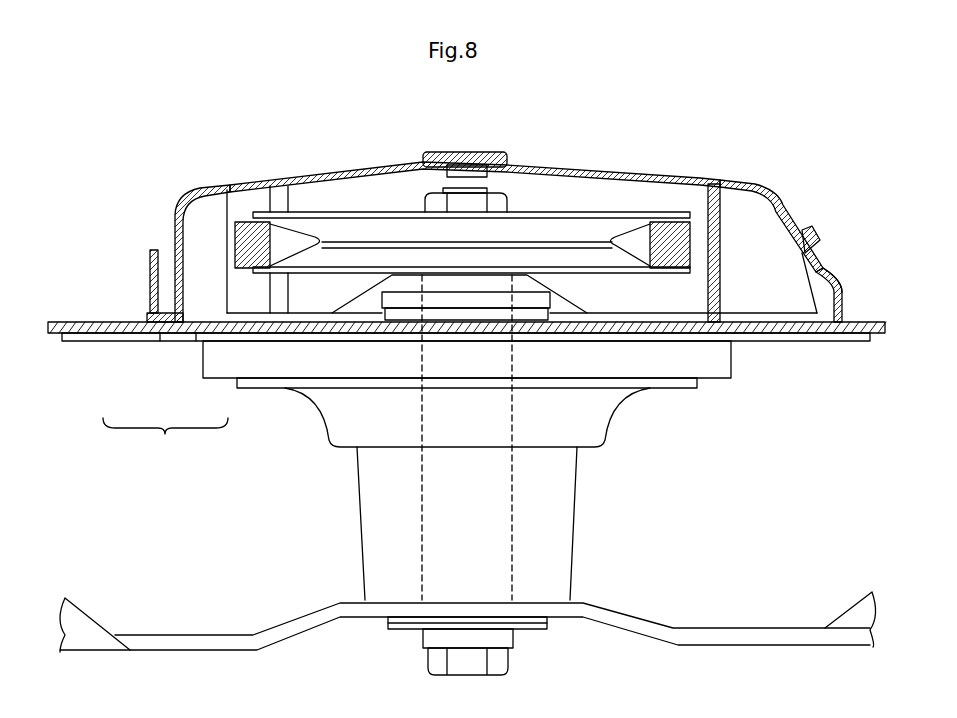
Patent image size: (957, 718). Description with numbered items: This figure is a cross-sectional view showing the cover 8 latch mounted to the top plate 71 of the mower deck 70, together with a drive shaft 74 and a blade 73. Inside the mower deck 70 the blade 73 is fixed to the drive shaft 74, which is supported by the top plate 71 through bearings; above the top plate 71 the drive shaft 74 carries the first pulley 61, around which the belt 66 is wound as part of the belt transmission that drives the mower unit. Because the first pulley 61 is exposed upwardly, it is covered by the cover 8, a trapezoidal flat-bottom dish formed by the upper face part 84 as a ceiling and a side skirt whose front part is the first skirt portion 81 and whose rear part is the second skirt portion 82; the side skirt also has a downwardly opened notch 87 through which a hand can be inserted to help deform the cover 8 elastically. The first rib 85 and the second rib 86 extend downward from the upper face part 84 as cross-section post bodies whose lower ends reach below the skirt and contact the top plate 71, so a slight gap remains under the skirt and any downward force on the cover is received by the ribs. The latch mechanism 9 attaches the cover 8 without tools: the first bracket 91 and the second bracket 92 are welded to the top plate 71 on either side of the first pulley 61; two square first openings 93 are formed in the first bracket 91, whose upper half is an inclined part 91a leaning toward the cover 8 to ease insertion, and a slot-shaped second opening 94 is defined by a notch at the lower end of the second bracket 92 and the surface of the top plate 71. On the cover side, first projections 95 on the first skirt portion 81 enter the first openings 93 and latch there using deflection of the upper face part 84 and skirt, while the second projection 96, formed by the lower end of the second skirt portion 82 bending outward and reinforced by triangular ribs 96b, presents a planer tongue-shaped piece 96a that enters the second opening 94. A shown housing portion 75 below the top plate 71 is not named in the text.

The cover 8 is at (466, 203).
The latch mechanism 9 is at (841, 261).
The first pulley 61 is at (563, 212).
The belt 66 is at (691, 262).
The mower deck 70 is at (72, 312).
The top plate 71 is at (773, 320).
The blade 73 is at (747, 628).
The drive shaft 74 is at (422, 517).
The spindle housing 75 is at (605, 435).
The first skirt portion 81 is at (785, 197).
The second skirt portion 82 is at (173, 237).
The upper face part 84 is at (360, 165).
The first rib 85 is at (722, 262).
The second rib 86 is at (243, 183).
The notch 87 is at (349, 307).
The first bracket 91 is at (848, 318).
The inclined part 91a is at (840, 282).
The second bracket 92 is at (150, 258).
The first opening 93 is at (824, 266).
The second opening 94 is at (150, 316).
The first projection 95 is at (818, 228).
The second projection 96 is at (165, 439).
The planer tongue-shaped piece 96a is at (160, 335).
The triangular rib 96b is at (173, 297).